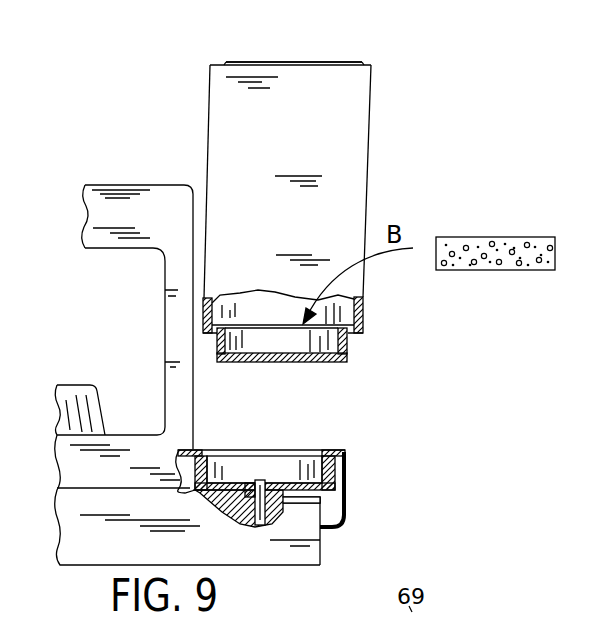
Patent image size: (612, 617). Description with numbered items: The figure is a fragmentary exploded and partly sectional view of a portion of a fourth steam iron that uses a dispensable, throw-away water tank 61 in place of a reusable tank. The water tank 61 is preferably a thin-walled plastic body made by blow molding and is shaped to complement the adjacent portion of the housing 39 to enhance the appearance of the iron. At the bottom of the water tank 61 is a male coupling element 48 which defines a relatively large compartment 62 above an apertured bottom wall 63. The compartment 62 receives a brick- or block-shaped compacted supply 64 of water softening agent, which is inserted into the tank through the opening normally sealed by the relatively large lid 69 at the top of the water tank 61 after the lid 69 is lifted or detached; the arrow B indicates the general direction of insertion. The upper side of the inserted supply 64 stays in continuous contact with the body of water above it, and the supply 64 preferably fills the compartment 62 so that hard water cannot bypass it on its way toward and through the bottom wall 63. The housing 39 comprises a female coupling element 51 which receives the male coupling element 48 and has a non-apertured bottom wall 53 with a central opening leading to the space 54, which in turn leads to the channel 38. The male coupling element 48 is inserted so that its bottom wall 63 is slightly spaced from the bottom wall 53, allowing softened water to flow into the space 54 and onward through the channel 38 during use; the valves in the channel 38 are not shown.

The channel 38 is at (272, 520).
The housing 39 is at (347, 467).
The male coupling element 48 is at (347, 350).
The female coupling element 51 is at (284, 464).
The bottom wall 53 is at (254, 483).
The space 54 is at (284, 503).
The water tank 61 is at (373, 183).
The compartment 62 is at (296, 342).
The bottom wall 63 is at (322, 364).
The supply of water softening agent 64 is at (481, 237).
The lid 69 is at (276, 62).